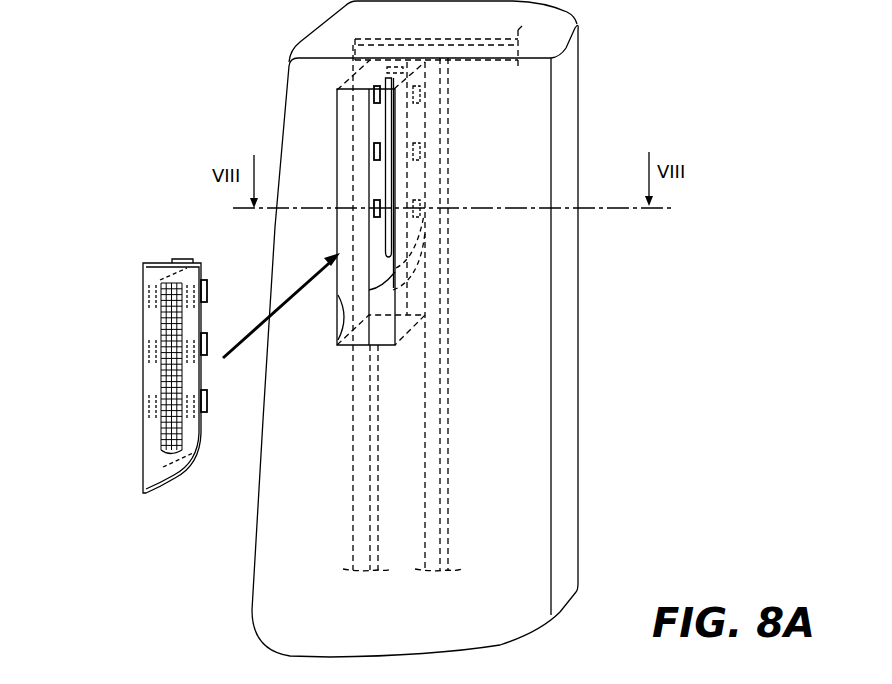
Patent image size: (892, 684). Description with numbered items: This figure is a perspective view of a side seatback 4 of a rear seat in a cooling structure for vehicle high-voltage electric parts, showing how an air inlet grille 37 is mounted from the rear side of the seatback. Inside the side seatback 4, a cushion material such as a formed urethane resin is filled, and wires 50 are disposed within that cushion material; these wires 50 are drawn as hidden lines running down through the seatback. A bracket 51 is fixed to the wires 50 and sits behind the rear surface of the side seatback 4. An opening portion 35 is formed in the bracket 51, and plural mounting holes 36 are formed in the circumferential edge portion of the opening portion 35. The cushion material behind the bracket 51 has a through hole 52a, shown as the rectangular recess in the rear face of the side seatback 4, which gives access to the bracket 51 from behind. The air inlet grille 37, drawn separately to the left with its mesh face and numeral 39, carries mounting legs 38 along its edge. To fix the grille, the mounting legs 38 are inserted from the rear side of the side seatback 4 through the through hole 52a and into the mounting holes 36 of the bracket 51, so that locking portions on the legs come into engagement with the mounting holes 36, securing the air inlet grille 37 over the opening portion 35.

The side seatback 4 is at (527, 523).
The opening portion 35 is at (428, 178).
The mounting holes 36 is at (373, 150).
The air inlet grille 37 is at (143, 278).
The mounting legs 38 is at (207, 290).
The grille / mesh 39 is at (161, 332).
The wires 50 is at (450, 412).
The bracket 51 is at (383, 178).
The through hole 52a is at (338, 341).